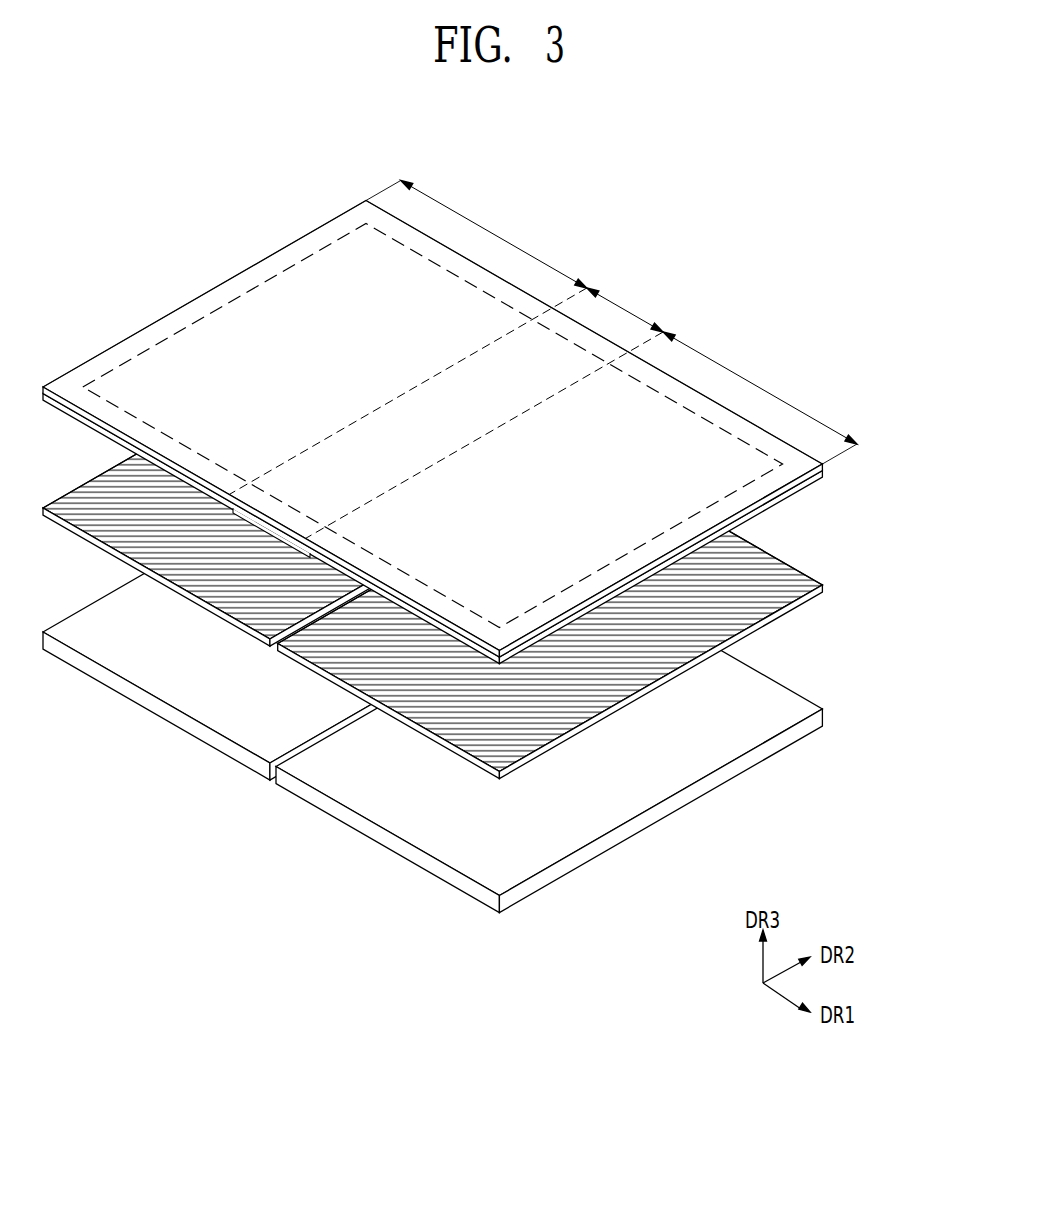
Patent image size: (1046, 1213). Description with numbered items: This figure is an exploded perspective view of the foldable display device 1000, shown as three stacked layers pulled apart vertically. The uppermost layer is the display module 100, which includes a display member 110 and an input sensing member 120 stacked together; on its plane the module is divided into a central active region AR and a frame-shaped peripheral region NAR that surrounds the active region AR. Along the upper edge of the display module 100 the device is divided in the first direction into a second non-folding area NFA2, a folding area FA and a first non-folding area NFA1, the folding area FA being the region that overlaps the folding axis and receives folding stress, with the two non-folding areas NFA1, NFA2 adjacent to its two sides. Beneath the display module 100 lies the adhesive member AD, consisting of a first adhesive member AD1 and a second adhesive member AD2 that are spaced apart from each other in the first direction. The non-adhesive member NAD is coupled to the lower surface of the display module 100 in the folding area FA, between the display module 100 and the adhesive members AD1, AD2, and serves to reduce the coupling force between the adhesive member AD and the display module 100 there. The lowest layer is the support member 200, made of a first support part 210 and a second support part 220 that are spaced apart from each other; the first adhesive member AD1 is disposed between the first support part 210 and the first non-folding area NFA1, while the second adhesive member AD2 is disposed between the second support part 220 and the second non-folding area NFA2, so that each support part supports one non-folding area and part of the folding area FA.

The display device 1000 is at (762, 298).
The display module 100 is at (906, 456).
The display member 110 is at (825, 478).
The input sensing member 120 is at (825, 466).
The support member 200 is at (240, 855).
The first support part 210 is at (302, 788).
The second support part 220 is at (242, 752).
The adhesive member AD is at (260, 940).
The first adhesive member AD1 is at (397, 725).
The second adhesive member AD2 is at (215, 612).
The non-adhesive member NAD is at (234, 508).
The folding area FA is at (446, 412).
The first non-folding area NFA1 is at (760, 398).
The second non-folding area NFA2 is at (476, 235).
The active region AR is at (190, 341).
The peripheral region NAR is at (238, 283).